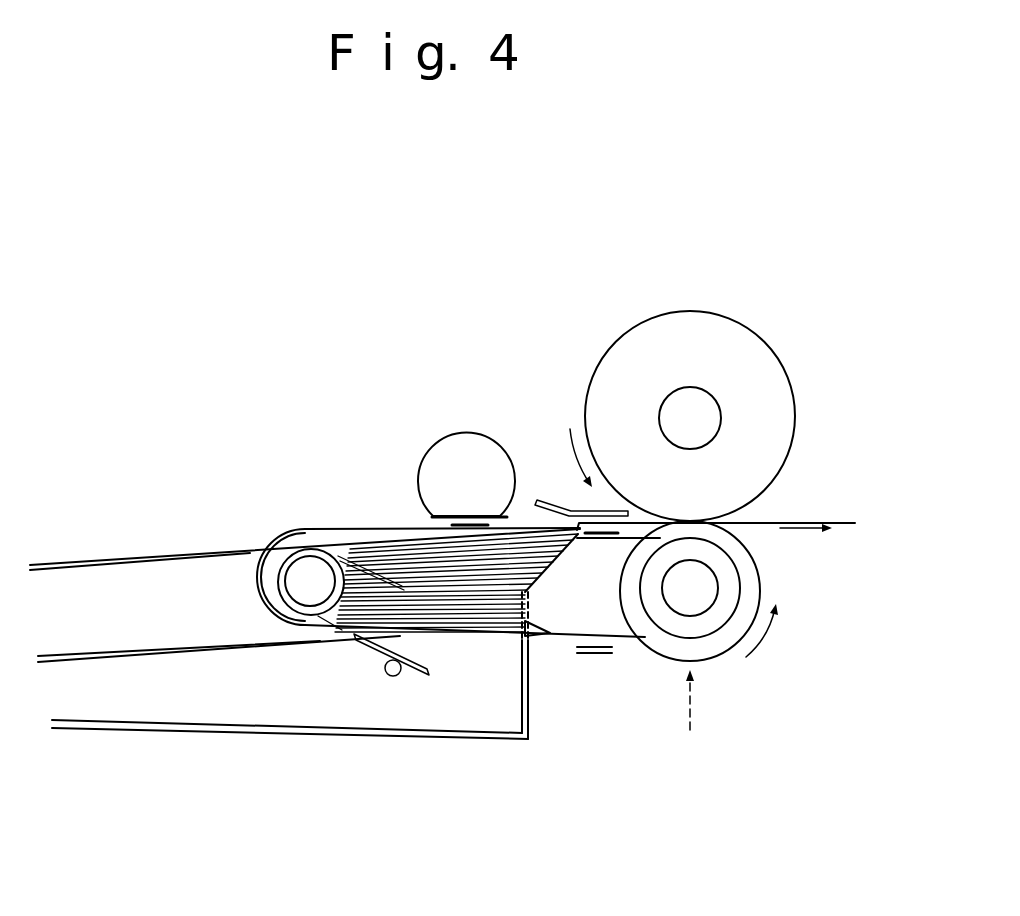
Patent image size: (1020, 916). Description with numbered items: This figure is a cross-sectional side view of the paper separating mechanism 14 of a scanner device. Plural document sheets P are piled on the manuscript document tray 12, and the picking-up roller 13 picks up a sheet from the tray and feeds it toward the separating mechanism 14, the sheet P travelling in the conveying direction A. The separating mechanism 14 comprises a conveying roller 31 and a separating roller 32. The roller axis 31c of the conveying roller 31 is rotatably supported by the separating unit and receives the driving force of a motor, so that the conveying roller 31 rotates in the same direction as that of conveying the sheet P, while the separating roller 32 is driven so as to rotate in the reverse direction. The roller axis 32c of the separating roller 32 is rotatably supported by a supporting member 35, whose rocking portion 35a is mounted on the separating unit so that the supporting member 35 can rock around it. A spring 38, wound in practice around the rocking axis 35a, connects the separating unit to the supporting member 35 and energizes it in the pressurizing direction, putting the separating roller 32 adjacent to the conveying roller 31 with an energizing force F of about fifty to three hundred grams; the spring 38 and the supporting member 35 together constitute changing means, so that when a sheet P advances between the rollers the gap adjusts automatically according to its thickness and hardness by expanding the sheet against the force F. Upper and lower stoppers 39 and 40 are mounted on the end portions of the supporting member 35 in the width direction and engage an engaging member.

The manuscript document tray 12 is at (152, 740).
The picking-up roller 13 is at (435, 443).
The separating mechanism 14 is at (830, 290).
The conveying roller 31 is at (710, 393).
The roller axis of the conveying roller 31c is at (690, 402).
The separating roller 32 is at (724, 612).
The roller axis of the separating roller 32c is at (722, 651).
The supporting member 35 is at (435, 547).
The rocking portion 35a is at (293, 572).
The spring 38 is at (370, 650).
The upper stopper 39 is at (583, 500).
The lower stopper 40 is at (592, 657).
The document sheet P is at (523, 517).
The sheet feeding direction A is at (803, 532).
The energizing force F is at (690, 712).